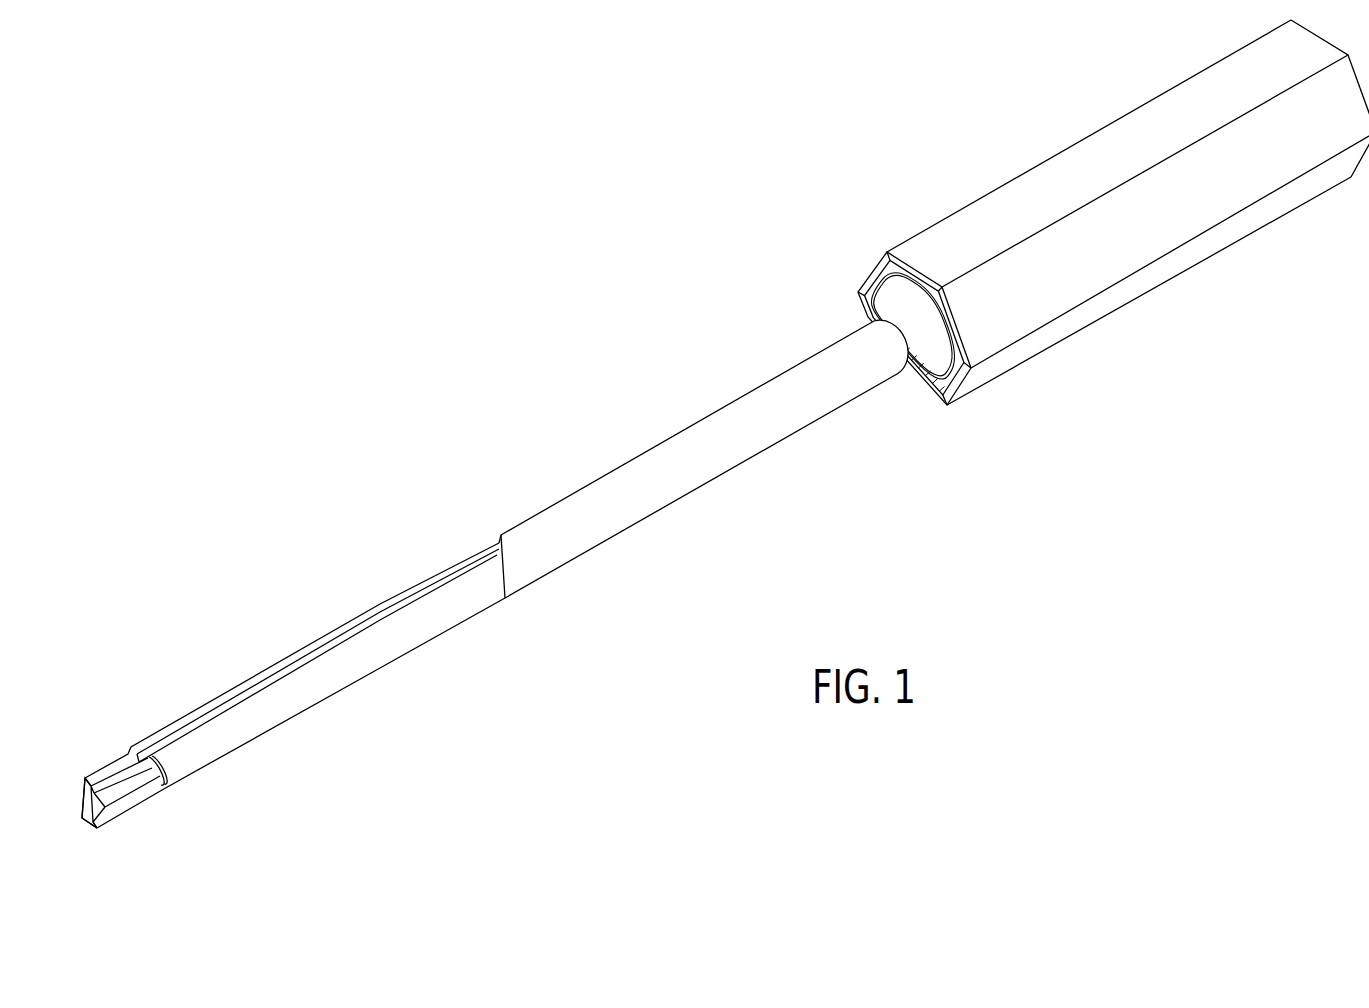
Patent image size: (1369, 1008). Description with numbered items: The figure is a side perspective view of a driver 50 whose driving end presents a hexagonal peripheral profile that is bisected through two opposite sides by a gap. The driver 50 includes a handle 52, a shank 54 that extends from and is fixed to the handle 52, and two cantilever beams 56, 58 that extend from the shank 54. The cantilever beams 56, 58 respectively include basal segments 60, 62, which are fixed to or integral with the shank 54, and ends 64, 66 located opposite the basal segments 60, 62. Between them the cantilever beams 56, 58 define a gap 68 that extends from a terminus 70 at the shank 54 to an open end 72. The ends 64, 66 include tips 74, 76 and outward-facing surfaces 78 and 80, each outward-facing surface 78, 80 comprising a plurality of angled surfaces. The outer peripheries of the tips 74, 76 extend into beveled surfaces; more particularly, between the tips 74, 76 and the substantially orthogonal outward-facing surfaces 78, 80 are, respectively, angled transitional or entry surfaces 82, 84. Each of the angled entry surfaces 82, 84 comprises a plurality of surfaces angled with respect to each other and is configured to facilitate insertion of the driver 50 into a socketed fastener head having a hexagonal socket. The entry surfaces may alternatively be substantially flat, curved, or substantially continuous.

The driver 50 is at (587, 247).
The handle 52 is at (1086, 173).
The shank 54 is at (706, 487).
The cantilever beam 56 is at (341, 656).
The cantilever beam 58 is at (318, 637).
The basal segment 60 is at (499, 563).
The basal segment 62 is at (486, 548).
The end 64 is at (122, 836).
The end 66 is at (73, 772).
The gap 68 is at (233, 692).
The terminus 70 is at (500, 537).
The open end 72 is at (80, 813).
The tip 74 is at (92, 828).
The tip 76 is at (78, 810).
The outward-facing surface 78 is at (122, 815).
The outward-facing surface 80 is at (102, 773).
The angled entry surface 82 is at (162, 784).
The angled entry surface 84 is at (86, 777).